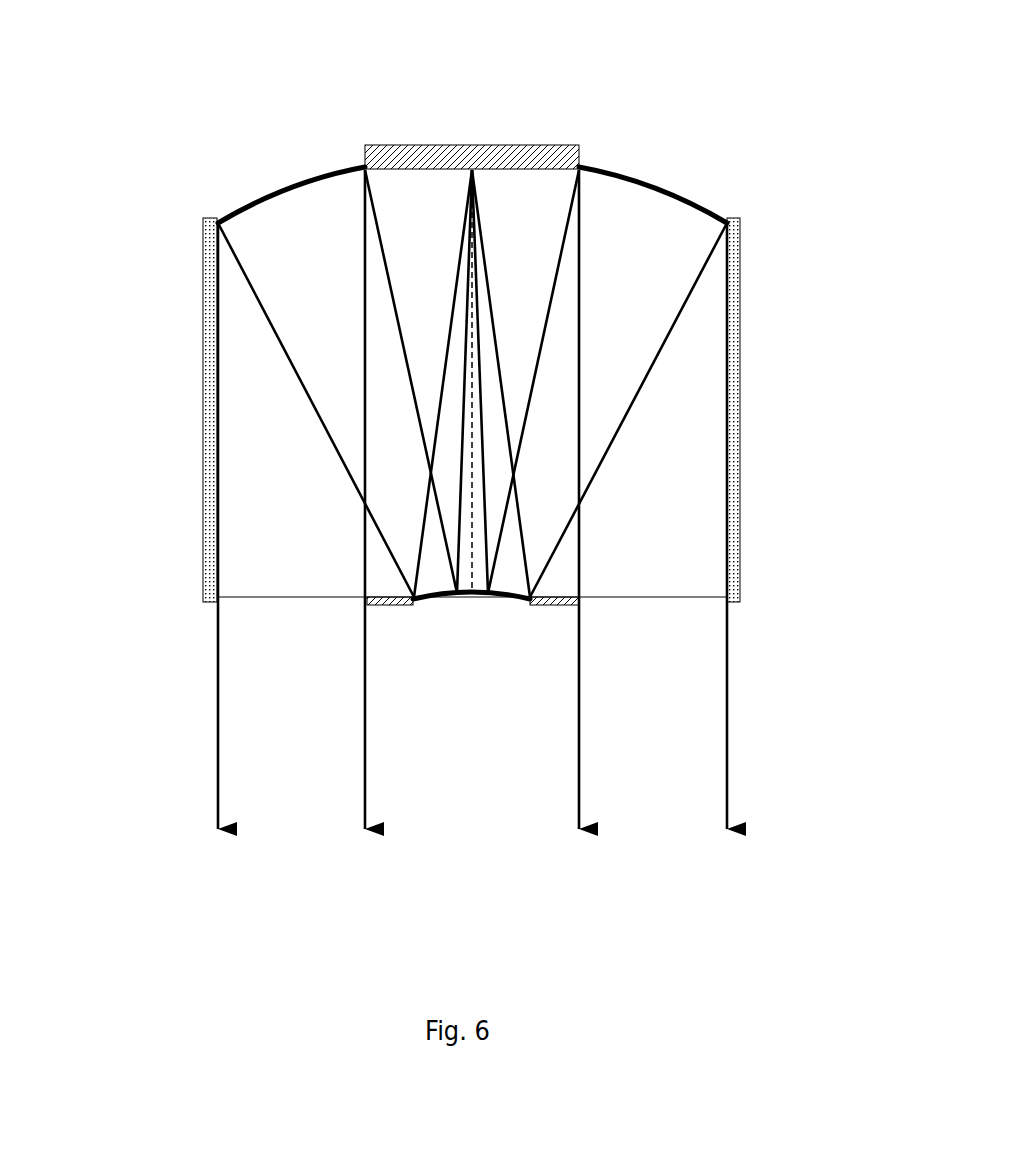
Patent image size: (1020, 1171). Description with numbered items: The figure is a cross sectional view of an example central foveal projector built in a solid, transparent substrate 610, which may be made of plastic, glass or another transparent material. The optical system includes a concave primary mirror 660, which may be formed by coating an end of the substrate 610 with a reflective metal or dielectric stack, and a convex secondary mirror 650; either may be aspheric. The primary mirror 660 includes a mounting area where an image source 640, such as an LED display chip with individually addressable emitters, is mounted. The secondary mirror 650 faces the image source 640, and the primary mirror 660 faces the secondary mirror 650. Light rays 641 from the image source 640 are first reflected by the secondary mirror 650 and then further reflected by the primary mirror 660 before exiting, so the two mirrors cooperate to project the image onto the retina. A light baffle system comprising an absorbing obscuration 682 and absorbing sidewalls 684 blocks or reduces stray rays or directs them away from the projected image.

The transparent substrate 610 is at (235, 317).
The image source 640 is at (365, 148).
The light rays 641 is at (484, 262).
The secondary mirror 650 is at (440, 599).
The concave primary mirror 660 is at (262, 193).
The absorbing obscuration 682 is at (388, 604).
The sidewalls 684 is at (207, 482).